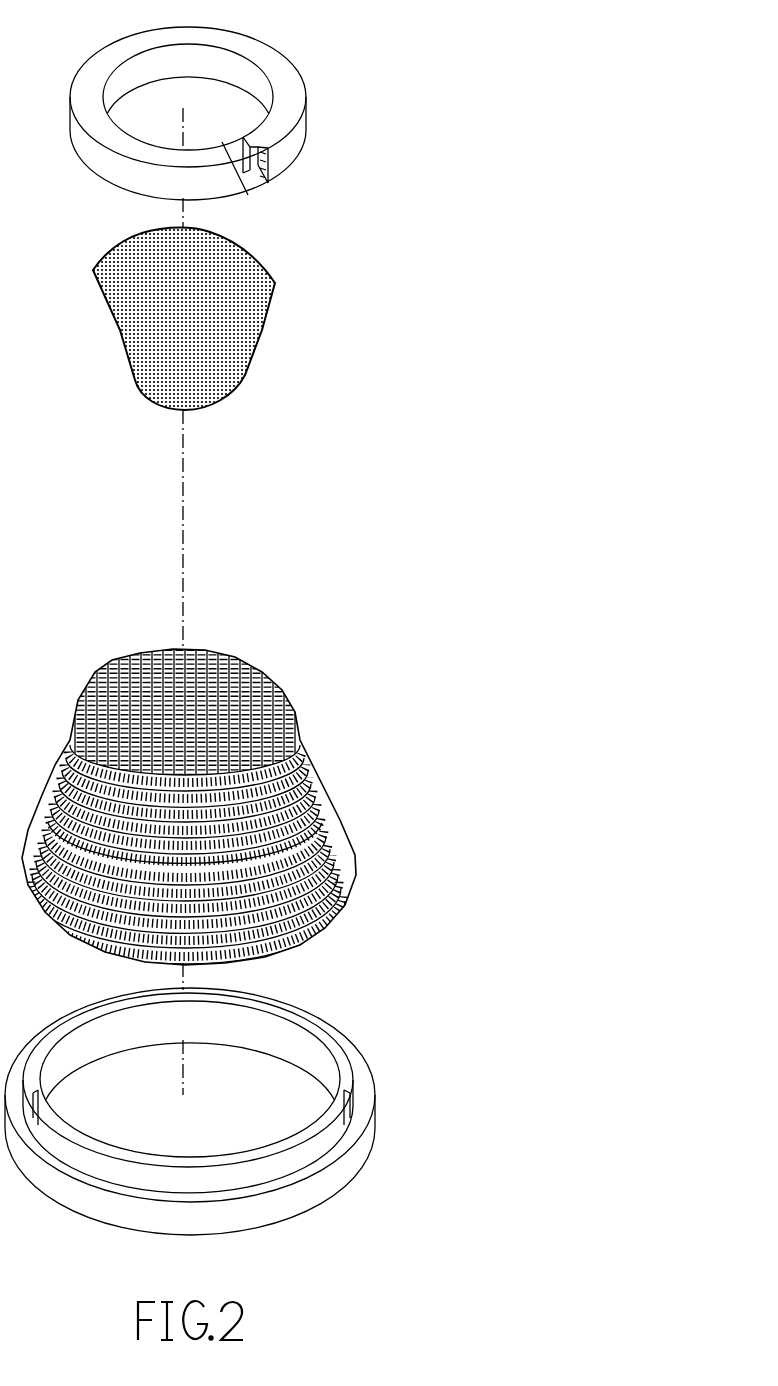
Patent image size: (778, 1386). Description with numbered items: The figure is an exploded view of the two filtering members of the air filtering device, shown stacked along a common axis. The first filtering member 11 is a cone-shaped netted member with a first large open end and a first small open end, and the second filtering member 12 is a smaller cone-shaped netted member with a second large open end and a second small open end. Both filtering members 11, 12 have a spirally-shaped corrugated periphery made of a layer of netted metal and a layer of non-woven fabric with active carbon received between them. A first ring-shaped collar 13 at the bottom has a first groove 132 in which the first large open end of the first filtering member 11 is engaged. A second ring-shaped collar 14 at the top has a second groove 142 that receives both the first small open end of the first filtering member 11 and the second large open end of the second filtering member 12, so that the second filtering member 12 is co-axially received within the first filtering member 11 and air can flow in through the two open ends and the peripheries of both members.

The first filtering member 11 is at (347, 798).
The second filtering member 12 is at (277, 314).
The first ring-shaped collar 13 is at (347, 1167).
The first groove 132 is at (353, 1102).
The second ring-shaped collar 14 is at (283, 72).
The second groove 142 is at (287, 175).